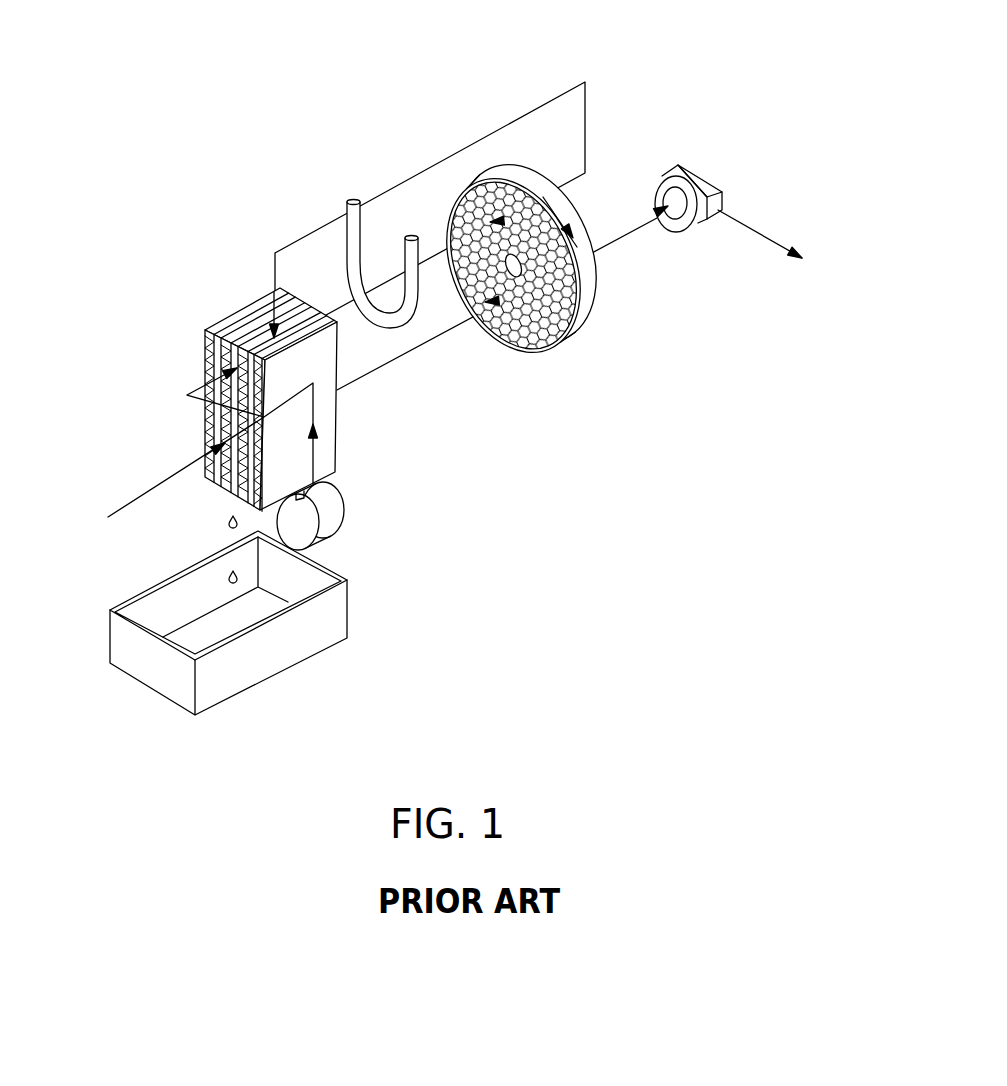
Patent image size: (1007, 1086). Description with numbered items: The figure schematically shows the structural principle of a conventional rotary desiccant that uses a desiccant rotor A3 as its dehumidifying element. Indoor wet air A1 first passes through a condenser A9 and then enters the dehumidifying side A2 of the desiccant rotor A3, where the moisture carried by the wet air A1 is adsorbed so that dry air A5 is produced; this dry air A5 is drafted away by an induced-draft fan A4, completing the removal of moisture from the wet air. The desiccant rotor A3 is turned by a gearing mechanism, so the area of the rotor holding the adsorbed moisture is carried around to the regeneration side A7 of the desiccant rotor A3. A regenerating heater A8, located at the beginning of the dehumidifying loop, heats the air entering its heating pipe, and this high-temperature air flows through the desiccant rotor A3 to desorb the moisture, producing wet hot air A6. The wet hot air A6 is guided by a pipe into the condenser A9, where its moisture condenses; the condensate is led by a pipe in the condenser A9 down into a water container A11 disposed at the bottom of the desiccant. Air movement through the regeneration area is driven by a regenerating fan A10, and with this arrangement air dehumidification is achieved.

The indoor wet air A1 is at (160, 488).
The dehumidifying side A2 is at (527, 325).
The desiccant rotor A3 is at (619, 352).
The induced-draft fan A4 is at (680, 221).
The dry air A5 is at (768, 238).
The wet hot air A6 is at (496, 130).
The regeneration side A7 is at (460, 197).
The regenerating heater A8 is at (356, 253).
The condenser A9 is at (245, 308).
The regenerating fan A10 is at (302, 527).
The water container A11 is at (262, 647).